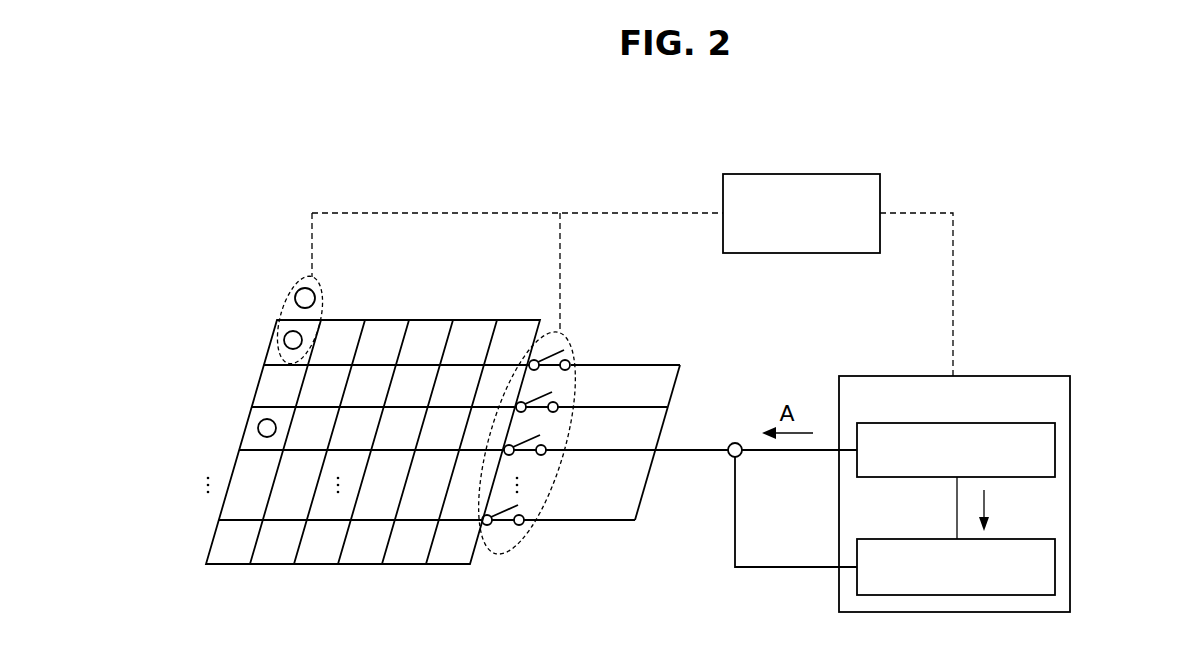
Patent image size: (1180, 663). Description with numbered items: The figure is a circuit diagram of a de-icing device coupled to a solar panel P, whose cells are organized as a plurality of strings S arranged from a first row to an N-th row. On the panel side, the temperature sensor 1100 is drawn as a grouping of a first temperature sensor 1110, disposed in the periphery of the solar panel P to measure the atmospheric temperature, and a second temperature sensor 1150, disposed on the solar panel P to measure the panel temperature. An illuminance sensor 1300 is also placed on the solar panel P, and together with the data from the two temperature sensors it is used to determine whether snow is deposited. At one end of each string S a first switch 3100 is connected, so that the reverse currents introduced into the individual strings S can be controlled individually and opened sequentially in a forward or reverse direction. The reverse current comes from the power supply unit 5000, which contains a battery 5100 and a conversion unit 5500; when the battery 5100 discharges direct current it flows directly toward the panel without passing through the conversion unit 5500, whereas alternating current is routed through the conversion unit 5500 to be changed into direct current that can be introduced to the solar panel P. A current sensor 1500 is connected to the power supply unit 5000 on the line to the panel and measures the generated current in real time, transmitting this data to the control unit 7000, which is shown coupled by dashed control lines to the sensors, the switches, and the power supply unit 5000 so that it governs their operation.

The temperature sensor 1100 is at (283, 312).
The first temperature sensor 1110 is at (296, 289).
The second temperature sensor 1150 is at (284, 340).
The illuminance sensor 1300 is at (258, 429).
The current sensor 1500 is at (735, 443).
The first switch 3100 is at (497, 557).
The power supply unit 5000 is at (995, 461).
The battery 5100 is at (1055, 447).
The conversion unit 5500 is at (1055, 562).
The control unit 7000 is at (800, 174).
The string S is at (212, 380).
The solar panel P is at (405, 320).